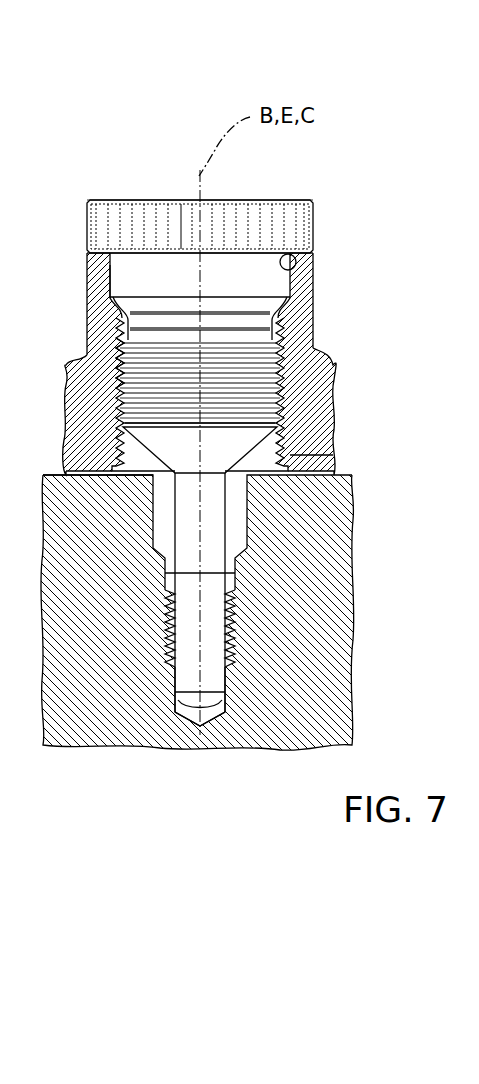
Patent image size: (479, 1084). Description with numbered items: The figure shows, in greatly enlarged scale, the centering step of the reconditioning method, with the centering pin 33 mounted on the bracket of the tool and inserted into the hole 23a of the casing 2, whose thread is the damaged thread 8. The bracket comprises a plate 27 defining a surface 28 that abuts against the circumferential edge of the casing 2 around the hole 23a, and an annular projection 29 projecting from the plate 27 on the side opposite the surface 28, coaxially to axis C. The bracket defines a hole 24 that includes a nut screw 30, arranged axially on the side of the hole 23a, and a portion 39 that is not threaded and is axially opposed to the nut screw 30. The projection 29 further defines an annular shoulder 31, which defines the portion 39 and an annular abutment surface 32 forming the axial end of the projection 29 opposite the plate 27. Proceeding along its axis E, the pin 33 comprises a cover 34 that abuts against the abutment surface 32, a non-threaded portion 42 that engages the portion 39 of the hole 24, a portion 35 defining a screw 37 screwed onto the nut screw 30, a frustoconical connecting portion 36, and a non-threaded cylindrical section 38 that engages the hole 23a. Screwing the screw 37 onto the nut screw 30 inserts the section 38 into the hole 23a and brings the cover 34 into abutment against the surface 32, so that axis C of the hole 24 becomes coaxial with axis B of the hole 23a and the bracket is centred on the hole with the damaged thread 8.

The casing 2 is at (325, 703).
The damaged thread 8 is at (177, 642).
The hole 23a is at (235, 690).
The hole 24 is at (114, 278).
The plate 27 is at (313, 424).
The surface 28 is at (80, 482).
The annular projection 29 is at (305, 310).
The nut screw 30 is at (122, 443).
The annular shoulder 31 is at (296, 262).
The abutment surface 32 is at (97, 250).
The centering pin 33 is at (338, 236).
The cover 34 is at (187, 222).
The portion 35 is at (122, 410).
The connecting portion 36 is at (220, 462).
The screw 37 is at (112, 372).
The cylindrical section 38 is at (237, 573).
The portion 39 is at (296, 255).
The non-threaded portion 42 is at (243, 265).